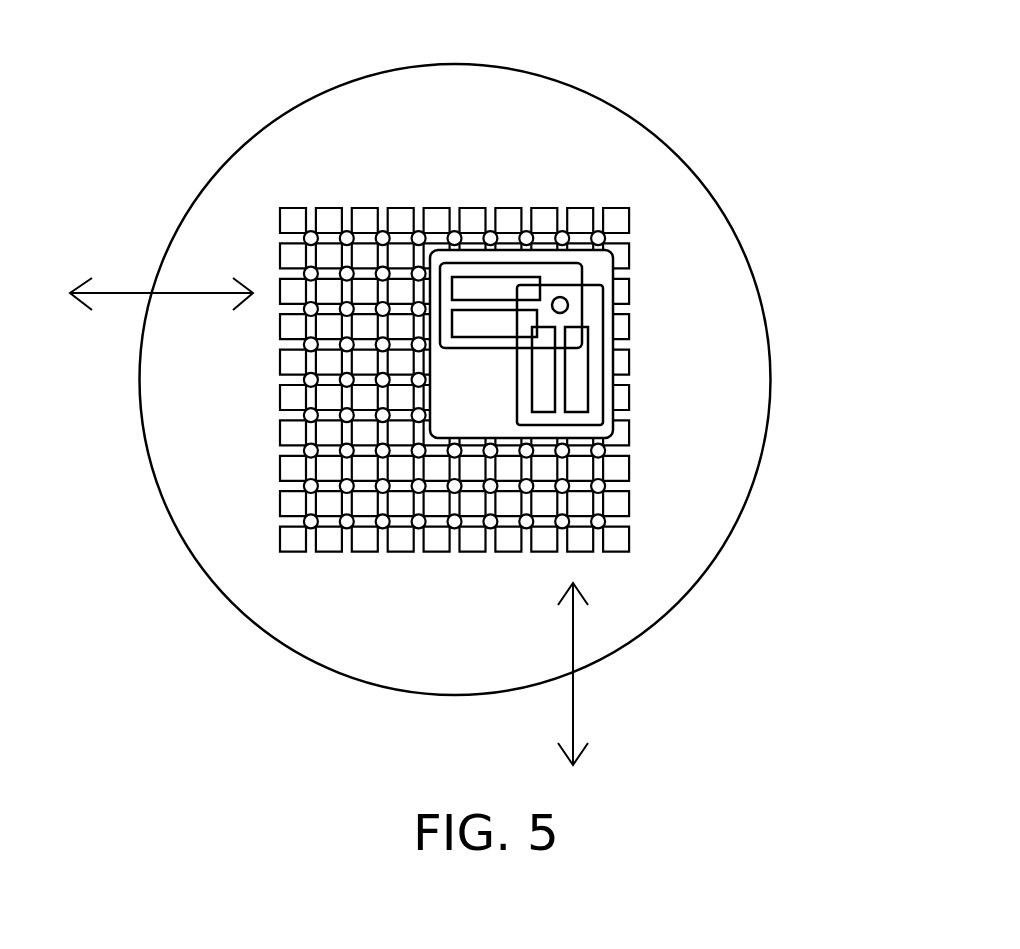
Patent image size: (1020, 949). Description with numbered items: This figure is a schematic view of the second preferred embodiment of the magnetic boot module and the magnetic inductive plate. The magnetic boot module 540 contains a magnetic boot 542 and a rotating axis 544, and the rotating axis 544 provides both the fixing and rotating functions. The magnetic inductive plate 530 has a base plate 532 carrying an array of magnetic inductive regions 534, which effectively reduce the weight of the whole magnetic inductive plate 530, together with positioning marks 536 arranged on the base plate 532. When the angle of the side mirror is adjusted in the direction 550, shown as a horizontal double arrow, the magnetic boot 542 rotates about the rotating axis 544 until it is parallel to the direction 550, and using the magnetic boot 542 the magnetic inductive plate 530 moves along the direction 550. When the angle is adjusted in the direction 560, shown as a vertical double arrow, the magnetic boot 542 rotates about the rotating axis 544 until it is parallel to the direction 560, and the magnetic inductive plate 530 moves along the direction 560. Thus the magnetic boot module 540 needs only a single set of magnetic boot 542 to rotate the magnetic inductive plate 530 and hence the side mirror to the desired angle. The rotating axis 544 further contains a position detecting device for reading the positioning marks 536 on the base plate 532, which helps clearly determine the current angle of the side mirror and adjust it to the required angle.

The magnetic inductive plate 530 is at (507, 379).
The base plate 532 is at (683, 210).
The magnetic inductive regions 534 is at (627, 253).
The positioning marks 536 is at (607, 485).
The magnetic boot module 540 is at (653, 223).
The magnetic boot 542 is at (467, 277).
The rotating axis 544 is at (569, 305).
The direction 550 is at (188, 265).
The direction 560 is at (598, 623).